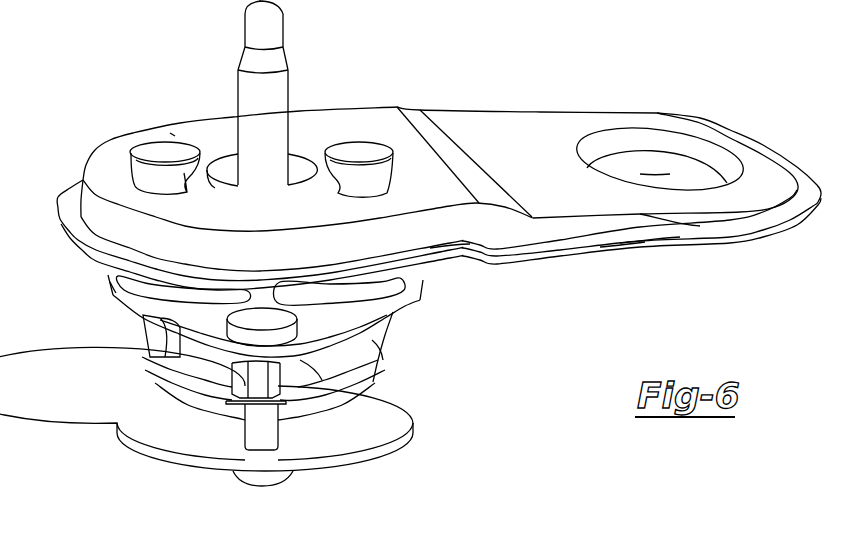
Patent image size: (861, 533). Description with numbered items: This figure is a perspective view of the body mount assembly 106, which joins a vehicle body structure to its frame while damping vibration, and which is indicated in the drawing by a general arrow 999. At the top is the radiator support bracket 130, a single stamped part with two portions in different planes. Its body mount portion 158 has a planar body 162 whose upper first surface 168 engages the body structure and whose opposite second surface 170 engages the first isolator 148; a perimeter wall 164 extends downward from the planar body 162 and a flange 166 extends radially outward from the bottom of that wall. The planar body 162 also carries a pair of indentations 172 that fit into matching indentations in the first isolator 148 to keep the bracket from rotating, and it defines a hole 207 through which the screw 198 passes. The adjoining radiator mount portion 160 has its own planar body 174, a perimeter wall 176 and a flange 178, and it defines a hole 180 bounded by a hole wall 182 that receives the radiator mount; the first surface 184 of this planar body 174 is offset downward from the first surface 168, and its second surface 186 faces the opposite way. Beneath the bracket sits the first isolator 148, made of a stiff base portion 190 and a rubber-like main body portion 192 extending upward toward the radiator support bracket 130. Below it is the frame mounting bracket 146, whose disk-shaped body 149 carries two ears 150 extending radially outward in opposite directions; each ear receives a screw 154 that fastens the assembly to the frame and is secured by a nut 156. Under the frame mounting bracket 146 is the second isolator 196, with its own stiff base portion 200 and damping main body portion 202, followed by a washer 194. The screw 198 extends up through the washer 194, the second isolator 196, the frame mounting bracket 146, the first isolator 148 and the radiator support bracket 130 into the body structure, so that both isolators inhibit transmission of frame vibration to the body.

The body mount assembly 106 is at (410, 245).
The radiator support bracket 130 is at (413, 176).
The frame mounting bracket 146 is at (206, 416).
The first isolator 148 is at (332, 305).
The disk-shaped body 149 is at (103, 270).
The ears 150 is at (300, 360).
The bolt or screw 154 is at (255, 428).
The nut 156 is at (237, 380).
The body mount portion 158 is at (125, 148).
The radiator mount portion 160 is at (660, 123).
The planar body 162 is at (172, 132).
The perimeter wall 164 is at (95, 203).
The flange 166 is at (83, 237).
The first surface 168 is at (335, 120).
The second surface 170 is at (450, 273).
The indentations 172 is at (155, 163).
The planar body 174 is at (565, 113).
The perimeter wall 176 is at (642, 222).
The flange 178 is at (640, 242).
The hole 180 is at (623, 168).
The hole wall 182 is at (707, 163).
The first surface 184 is at (510, 138).
The second surface 186 is at (635, 262).
The base portion 190 is at (150, 312).
The main body portion 192 is at (388, 283).
The washer 194 is at (153, 383).
The second isolator 196 is at (373, 378).
The bolt or screw 198 is at (280, 68).
The base portion 200 is at (337, 412).
The main body portion 202 is at (377, 352).
The hole 207 is at (230, 163).
The lower assembly 999 is at (285, 380).